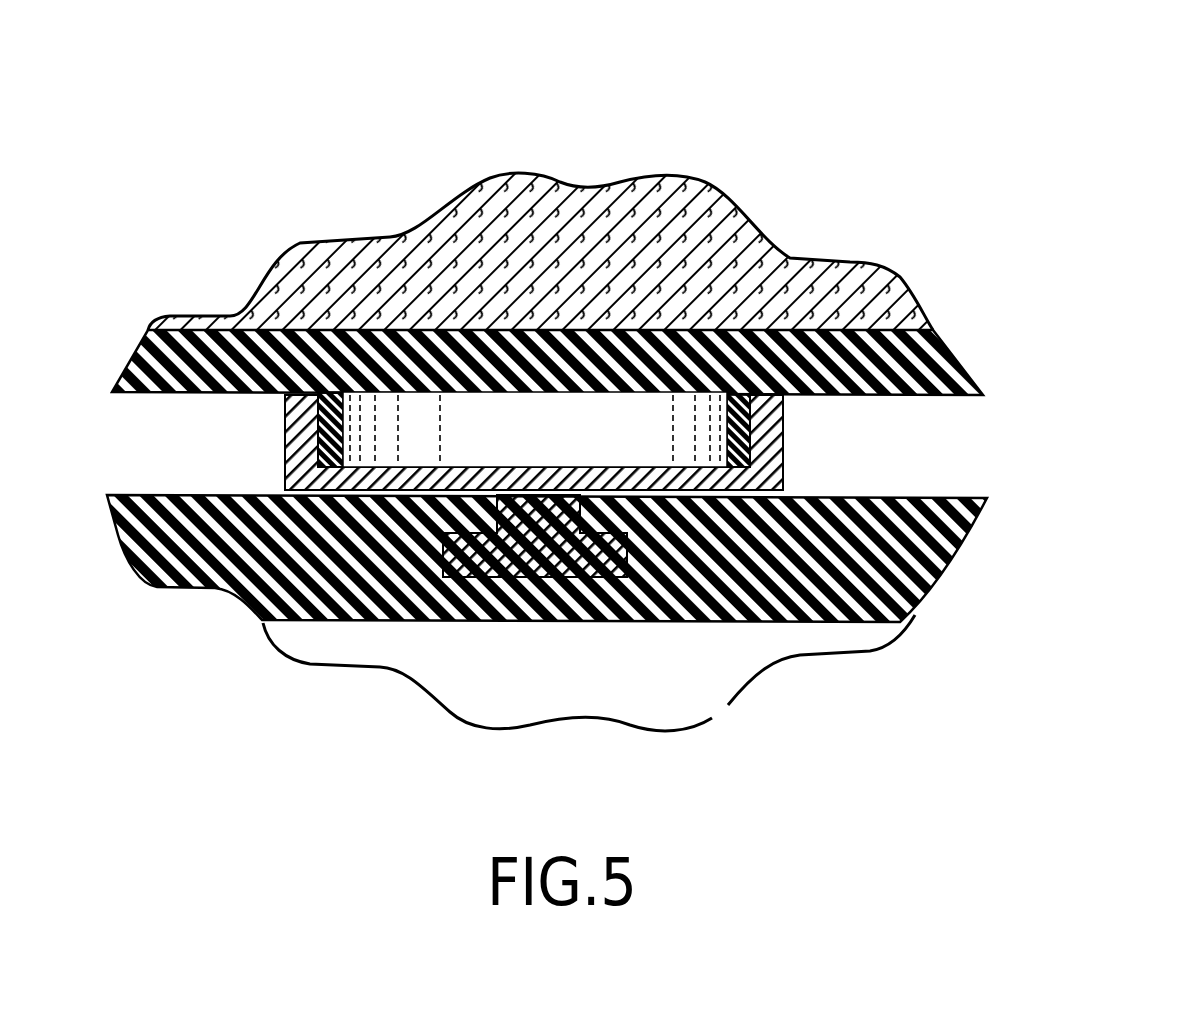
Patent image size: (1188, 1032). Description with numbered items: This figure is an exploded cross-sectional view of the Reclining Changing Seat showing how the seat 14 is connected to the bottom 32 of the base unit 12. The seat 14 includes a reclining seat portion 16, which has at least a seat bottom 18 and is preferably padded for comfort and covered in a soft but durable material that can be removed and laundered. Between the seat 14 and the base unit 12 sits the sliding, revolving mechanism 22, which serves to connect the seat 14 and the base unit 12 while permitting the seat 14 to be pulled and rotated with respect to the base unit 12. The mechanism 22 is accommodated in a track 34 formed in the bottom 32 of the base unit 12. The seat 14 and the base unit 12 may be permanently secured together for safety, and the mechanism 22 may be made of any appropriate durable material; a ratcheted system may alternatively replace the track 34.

The base unit 12 is at (983, 518).
The seat 14 is at (917, 367).
The reclining seat portion 16 is at (490, 213).
The seat bottom 18 is at (670, 200).
The sliding, revolving mechanism 22 is at (785, 445).
The bottom of the base unit 32 is at (920, 600).
The track 34 is at (452, 565).